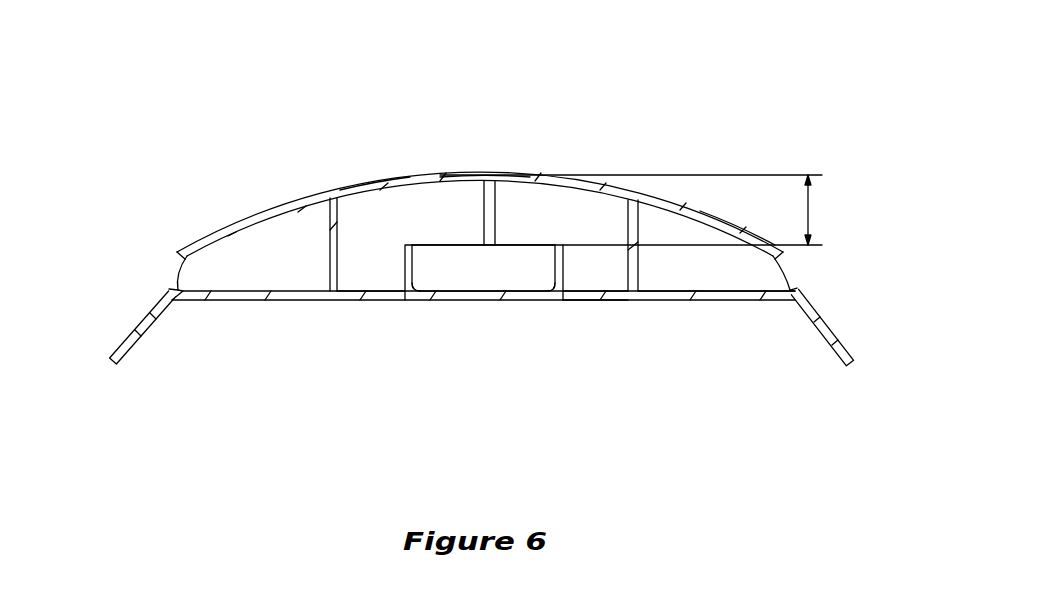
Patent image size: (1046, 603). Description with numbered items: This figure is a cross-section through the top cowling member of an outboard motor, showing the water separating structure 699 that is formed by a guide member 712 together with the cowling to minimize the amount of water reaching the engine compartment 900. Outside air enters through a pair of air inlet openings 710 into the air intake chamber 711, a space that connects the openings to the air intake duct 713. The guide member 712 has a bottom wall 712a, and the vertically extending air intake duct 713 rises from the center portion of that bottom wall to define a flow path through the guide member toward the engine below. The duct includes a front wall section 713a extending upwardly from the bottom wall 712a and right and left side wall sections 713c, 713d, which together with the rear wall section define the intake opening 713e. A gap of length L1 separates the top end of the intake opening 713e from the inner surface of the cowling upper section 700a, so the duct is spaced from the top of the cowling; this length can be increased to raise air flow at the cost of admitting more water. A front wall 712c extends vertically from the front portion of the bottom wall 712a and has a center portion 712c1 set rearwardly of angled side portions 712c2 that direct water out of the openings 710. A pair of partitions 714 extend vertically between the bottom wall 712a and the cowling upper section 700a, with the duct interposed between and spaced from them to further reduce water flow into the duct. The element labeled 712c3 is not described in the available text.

The cowling upper section 700a is at (490, 172).
The air inlet openings 710 is at (225, 243).
The water separating structure 699 is at (735, 237).
The front wall section 713a is at (373, 181).
The intake opening 713e is at (440, 260).
The air intake duct 713 is at (465, 260).
The right side wall section 713c is at (398, 294).
The left side wall section 713d is at (568, 293).
The center portion 712c1 is at (490, 178).
The partitions 714 is at (330, 260).
The air intake chamber 711 is at (668, 227).
The guide member 712 is at (257, 308).
The leg 712c3 is at (175, 283).
The side portions 712c2 is at (373, 267).
The front wall 712c is at (598, 292).
The bottom wall 712a is at (718, 288).
The length L1 is at (810, 210).
The engine compartment 900 is at (455, 428).